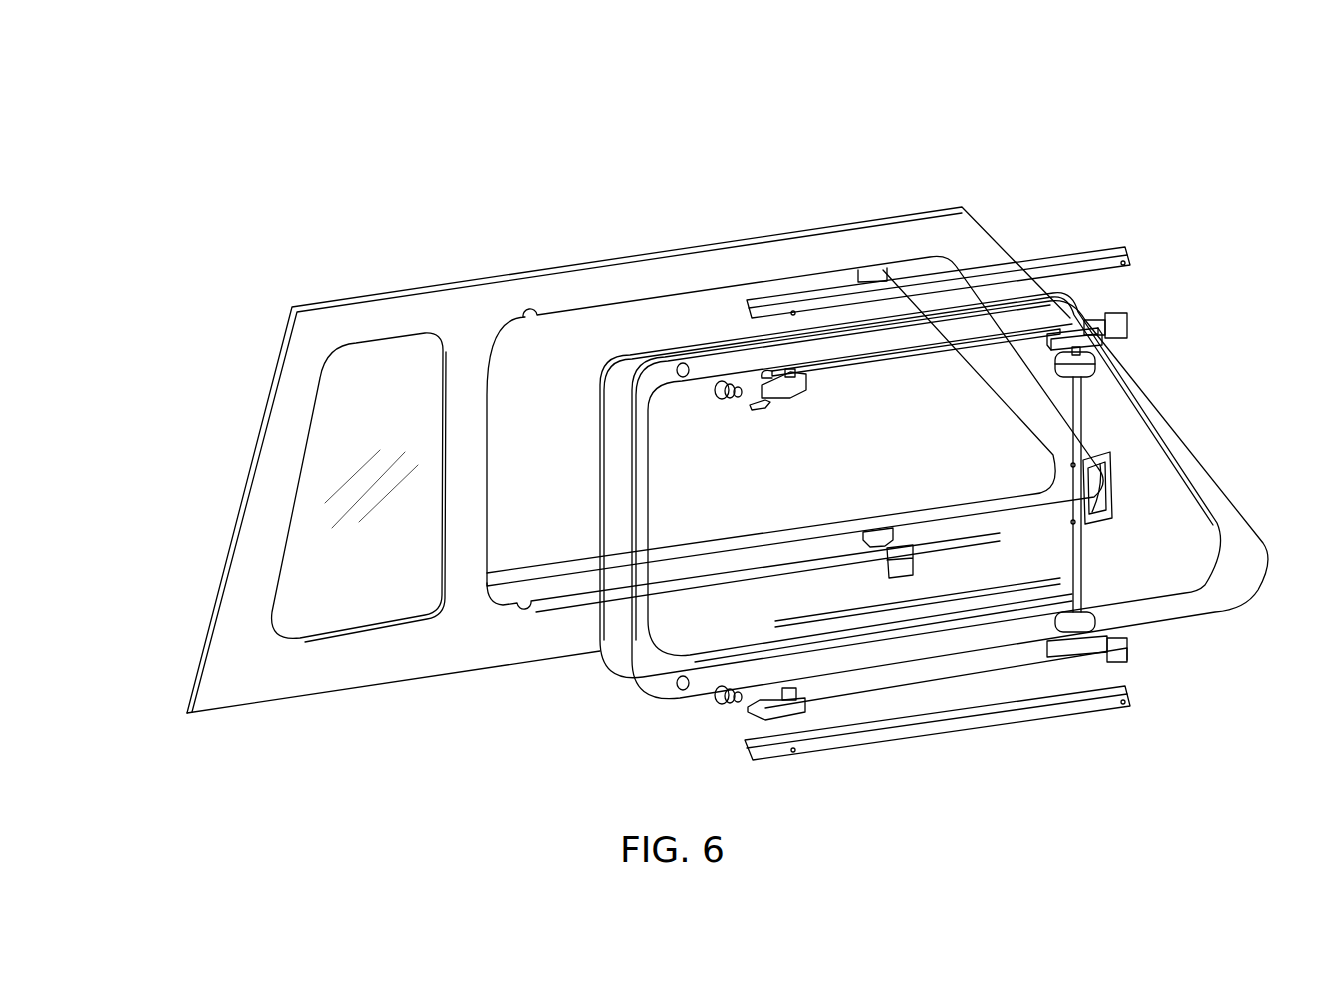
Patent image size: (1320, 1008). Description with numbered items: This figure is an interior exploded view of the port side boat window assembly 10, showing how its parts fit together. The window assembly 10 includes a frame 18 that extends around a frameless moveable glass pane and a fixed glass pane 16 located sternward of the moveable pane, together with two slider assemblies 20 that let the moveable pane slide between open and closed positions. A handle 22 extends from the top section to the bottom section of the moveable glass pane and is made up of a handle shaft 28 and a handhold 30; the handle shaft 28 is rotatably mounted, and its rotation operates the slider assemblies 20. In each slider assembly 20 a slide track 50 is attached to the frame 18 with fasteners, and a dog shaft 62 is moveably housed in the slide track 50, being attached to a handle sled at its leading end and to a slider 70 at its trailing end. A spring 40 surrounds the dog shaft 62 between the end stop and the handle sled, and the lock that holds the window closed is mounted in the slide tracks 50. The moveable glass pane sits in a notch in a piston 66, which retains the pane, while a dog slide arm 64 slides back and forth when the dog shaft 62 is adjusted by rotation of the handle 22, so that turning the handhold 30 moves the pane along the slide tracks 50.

The window assembly 10 is at (1068, 160).
The fixed glass pane 16 is at (340, 410).
The frame 18 is at (240, 468).
The slider assemblies 20 is at (1072, 243).
The handle 22 is at (1062, 508).
The handle shaft 28 is at (1082, 412).
The handhold 30 is at (1115, 485).
The spring 40 is at (1077, 333).
The slide tracks 50 is at (765, 298).
The dog shaft 62 is at (922, 355).
The dog slide arm 64 is at (762, 406).
The piston 66 is at (729, 400).
The slider 70 is at (808, 384).